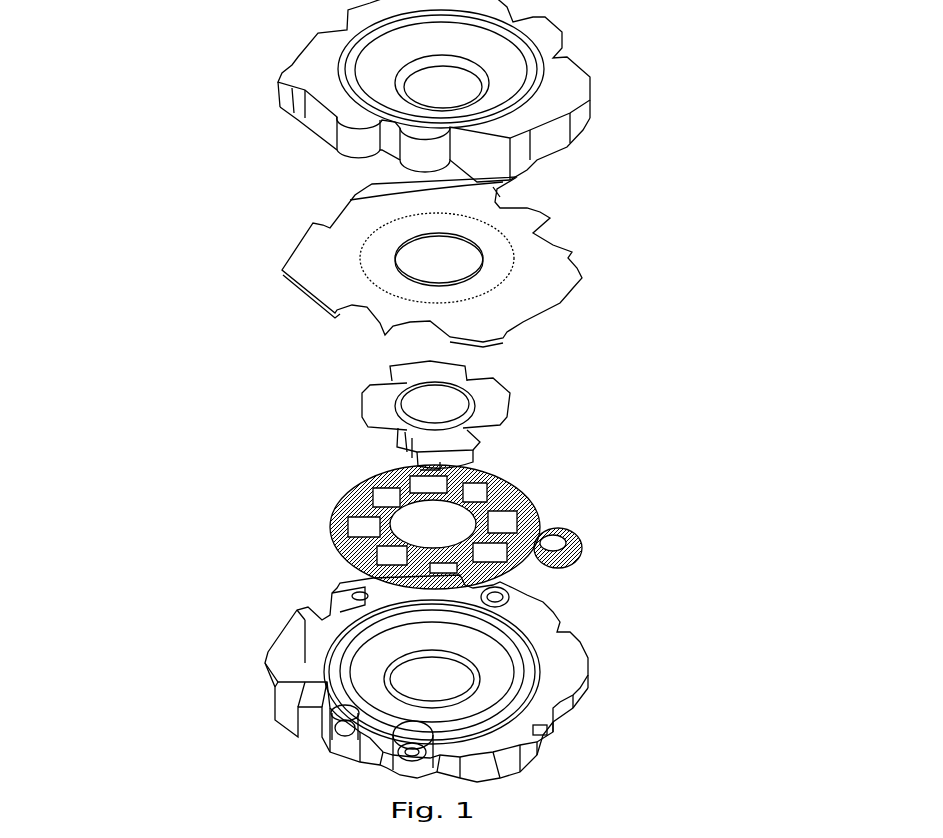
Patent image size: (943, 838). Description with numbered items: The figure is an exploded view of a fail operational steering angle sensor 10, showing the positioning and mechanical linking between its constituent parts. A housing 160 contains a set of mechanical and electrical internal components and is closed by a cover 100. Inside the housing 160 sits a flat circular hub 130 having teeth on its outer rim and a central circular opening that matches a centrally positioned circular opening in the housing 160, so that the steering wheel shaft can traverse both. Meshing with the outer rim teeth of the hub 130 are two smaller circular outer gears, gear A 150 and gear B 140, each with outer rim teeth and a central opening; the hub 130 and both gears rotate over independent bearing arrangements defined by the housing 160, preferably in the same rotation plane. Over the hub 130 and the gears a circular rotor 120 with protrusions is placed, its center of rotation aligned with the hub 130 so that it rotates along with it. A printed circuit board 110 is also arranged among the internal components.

The fail operational steering angle sensor 10 is at (150, 90).
The cover 100 is at (550, 102).
The printed circuit board 110 is at (338, 263).
The rotor 120 is at (490, 404).
The hub 130 is at (345, 517).
The gear B 140 is at (562, 541).
The gear A 150 is at (495, 599).
The housing 160 is at (330, 696).